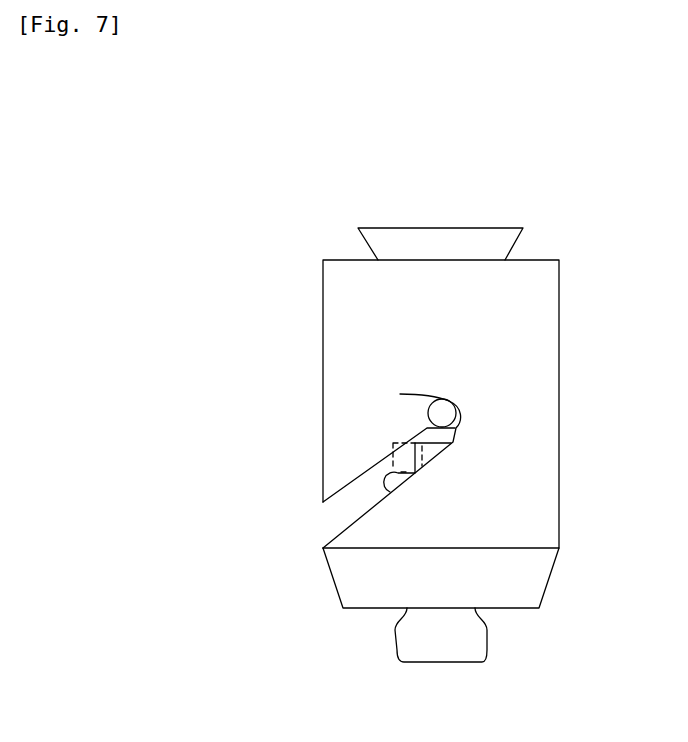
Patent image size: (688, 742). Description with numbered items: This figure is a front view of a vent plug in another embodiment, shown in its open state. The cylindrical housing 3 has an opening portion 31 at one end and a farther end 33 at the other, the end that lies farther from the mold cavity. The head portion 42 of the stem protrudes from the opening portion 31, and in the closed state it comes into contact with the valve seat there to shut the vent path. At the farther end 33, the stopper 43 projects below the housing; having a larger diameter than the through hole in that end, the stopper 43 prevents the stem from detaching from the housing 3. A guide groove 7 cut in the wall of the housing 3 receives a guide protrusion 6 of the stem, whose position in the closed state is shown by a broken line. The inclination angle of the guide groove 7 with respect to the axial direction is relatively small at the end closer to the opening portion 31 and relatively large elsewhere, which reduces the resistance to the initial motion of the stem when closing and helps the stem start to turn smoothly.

The housing 3 is at (432, 448).
The opening portion 31 is at (347, 290).
The head portion 42 is at (482, 242).
The farther end 33 is at (340, 598).
The stopper 43 is at (439, 660).
The guide groove 7 is at (340, 530).
The guide protrusion 6 is at (400, 394).